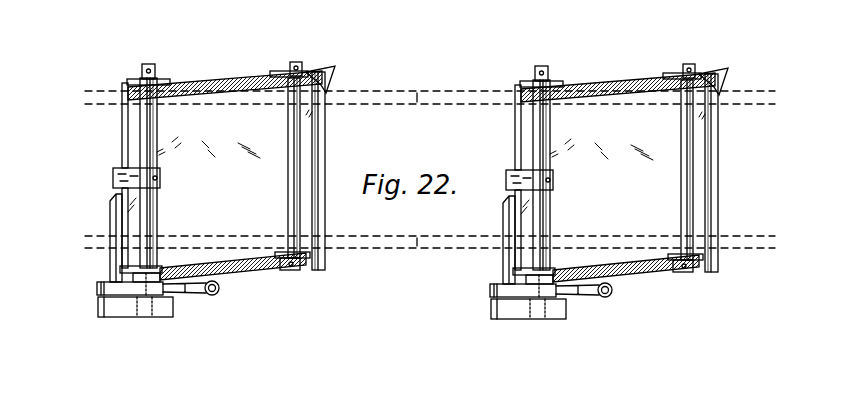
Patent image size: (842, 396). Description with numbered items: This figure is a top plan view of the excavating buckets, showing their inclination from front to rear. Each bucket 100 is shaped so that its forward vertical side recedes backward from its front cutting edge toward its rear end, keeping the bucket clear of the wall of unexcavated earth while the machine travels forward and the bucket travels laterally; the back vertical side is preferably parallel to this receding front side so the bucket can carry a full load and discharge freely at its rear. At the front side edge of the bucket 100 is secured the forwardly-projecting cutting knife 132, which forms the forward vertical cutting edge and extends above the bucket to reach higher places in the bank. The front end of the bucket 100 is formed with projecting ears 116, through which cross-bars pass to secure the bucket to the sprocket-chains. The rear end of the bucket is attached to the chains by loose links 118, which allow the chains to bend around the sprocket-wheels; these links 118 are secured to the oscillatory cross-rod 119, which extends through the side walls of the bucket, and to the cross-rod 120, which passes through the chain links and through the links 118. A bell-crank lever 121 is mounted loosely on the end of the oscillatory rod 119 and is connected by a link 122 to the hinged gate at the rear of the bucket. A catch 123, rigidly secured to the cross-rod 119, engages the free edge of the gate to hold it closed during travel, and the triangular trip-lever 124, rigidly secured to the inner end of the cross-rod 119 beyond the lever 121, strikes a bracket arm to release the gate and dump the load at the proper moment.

The bucket 100 is at (416, 162).
The projecting ears 116 is at (302, 70).
The loose links 118 is at (163, 77).
The oscillatory cross-rod 119 is at (149, 133).
The cross-rod 120 is at (288, 211).
The bell-crank lever 121 is at (100, 287).
The link 122 is at (189, 296).
The catch 123 is at (113, 181).
The trip-lever 124 is at (128, 308).
The cutting knife 132 is at (325, 107).